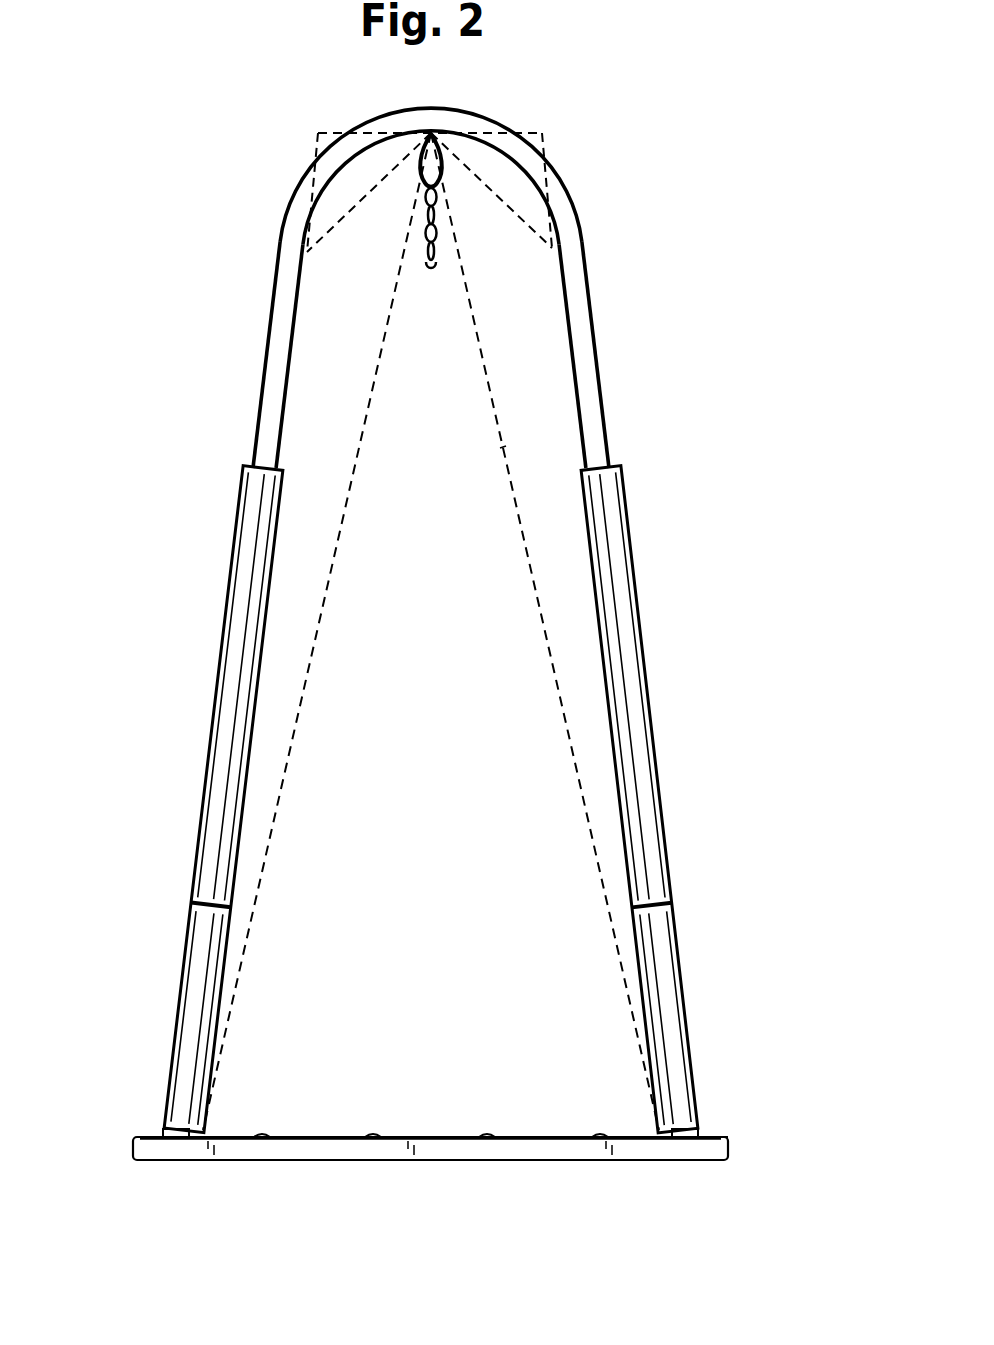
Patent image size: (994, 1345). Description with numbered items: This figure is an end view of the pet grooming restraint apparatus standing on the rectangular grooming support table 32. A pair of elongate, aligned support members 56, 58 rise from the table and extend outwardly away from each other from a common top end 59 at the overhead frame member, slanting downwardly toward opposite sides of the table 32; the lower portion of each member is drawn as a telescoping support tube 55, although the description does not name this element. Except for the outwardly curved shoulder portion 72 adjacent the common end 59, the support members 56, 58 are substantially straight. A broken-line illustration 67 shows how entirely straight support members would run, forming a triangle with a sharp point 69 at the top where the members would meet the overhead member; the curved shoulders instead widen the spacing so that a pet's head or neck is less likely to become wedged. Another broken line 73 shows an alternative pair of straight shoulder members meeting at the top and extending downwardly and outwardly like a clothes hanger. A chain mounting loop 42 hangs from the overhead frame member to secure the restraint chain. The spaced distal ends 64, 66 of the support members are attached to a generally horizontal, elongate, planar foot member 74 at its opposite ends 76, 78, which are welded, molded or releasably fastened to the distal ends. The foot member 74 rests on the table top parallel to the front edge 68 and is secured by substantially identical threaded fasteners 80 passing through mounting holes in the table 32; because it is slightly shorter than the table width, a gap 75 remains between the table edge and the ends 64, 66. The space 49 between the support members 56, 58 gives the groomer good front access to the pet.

The grooming support table 32 is at (540, 1136).
The chain mounting loop 42 is at (430, 187).
The space 49 is at (505, 598).
The telescopic support tube 55 is at (220, 687).
The support member 56 is at (267, 352).
The support member 58 is at (592, 325).
The common end 59 is at (476, 114).
The distal end 64 is at (166, 1137).
The distal end 66 is at (684, 1130).
The broken-line illustration 67 is at (503, 447).
The front edge 68 is at (368, 1150).
The sharp point 69 is at (429, 130).
The curved shoulder portion 72 is at (541, 131).
The broken-line straight shoulder members 73 is at (502, 204).
The foot member 74 is at (414, 1138).
The gap 75 is at (713, 1137).
The end of foot member 76 is at (133, 1149).
The end of foot member 78 is at (732, 1149).
The threaded fastener 80 is at (255, 1138).